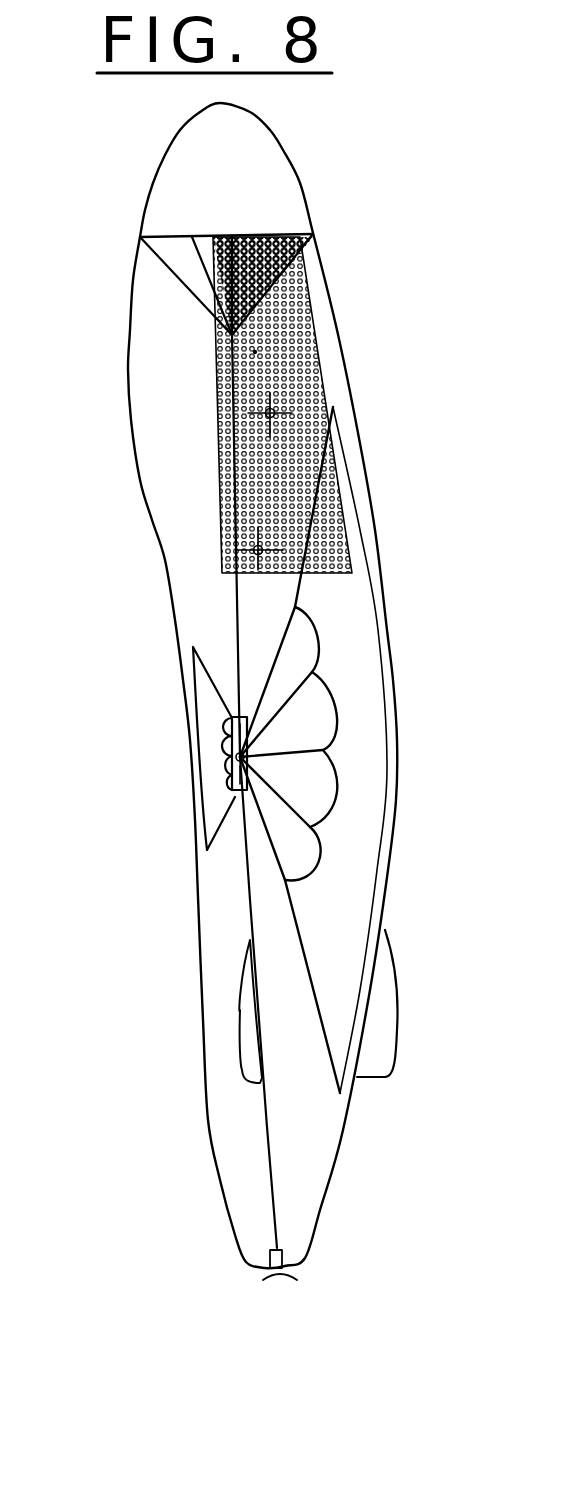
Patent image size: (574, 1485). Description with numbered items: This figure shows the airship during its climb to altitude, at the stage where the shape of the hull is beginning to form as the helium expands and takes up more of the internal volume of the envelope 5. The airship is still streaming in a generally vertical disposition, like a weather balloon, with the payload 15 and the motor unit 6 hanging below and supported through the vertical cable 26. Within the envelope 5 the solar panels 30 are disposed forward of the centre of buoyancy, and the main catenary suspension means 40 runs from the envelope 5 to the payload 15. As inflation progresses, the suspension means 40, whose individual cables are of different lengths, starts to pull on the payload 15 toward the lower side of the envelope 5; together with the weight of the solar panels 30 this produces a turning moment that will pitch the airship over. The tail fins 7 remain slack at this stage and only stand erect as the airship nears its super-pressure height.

The envelope 5 is at (140, 478).
The motor unit 6 is at (285, 1283).
The tail fins 7 is at (383, 1004).
The payload 15 is at (232, 733).
The vertical cable 26 is at (237, 622).
The solar panels 30 is at (290, 320).
The main catenary suspension means 40 is at (330, 685).